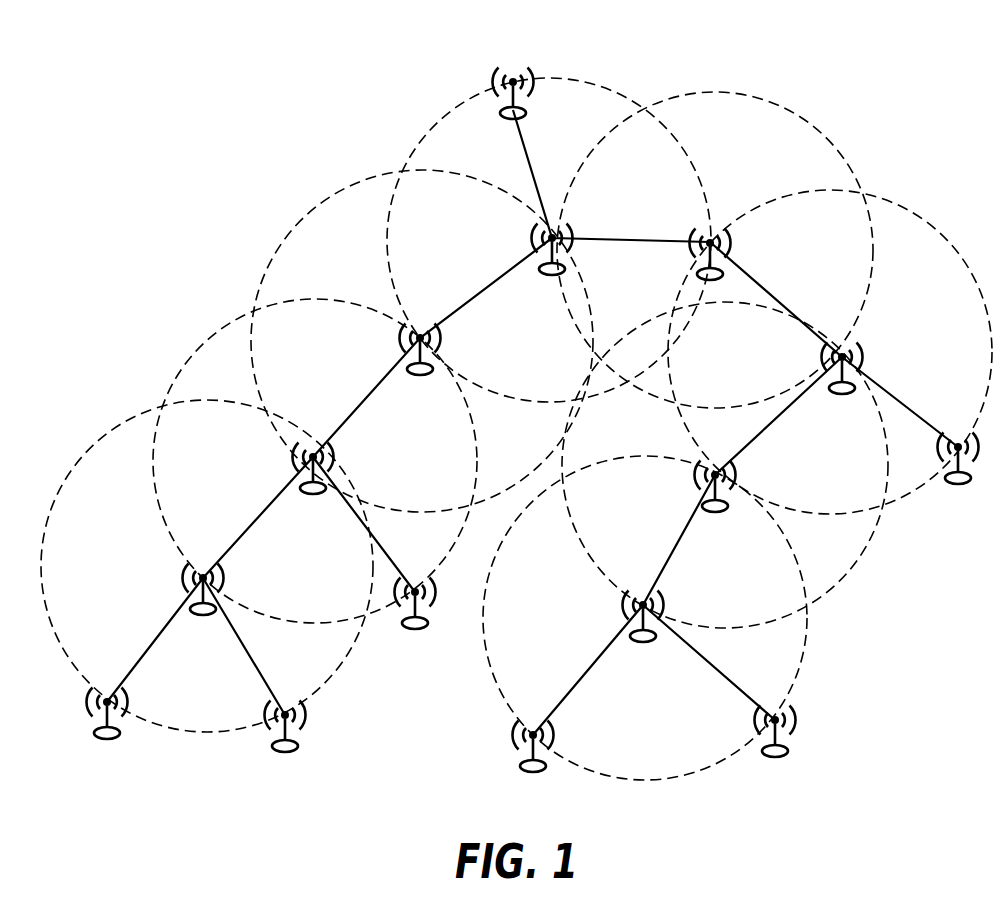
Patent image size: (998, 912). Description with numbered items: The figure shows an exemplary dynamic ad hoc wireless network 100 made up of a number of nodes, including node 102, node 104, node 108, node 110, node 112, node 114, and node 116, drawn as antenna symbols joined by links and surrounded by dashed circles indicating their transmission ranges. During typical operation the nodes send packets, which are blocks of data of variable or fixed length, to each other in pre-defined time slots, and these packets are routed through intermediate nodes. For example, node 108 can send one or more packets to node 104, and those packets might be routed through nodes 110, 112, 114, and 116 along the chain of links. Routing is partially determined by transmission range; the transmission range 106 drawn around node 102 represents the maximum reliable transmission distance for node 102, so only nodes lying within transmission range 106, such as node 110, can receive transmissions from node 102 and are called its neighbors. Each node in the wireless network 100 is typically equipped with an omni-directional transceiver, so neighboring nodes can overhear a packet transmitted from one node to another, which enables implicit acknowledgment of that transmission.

The dynamic ad hoc wireless network 100 is at (500, 405).
The node 102 is at (193, 612).
The node 104 is at (857, 345).
The transmission range 106 is at (137, 468).
The node 108 is at (410, 620).
The node 110 is at (331, 470).
The node 112 is at (406, 366).
The node 114 is at (548, 232).
The node 116 is at (704, 238).